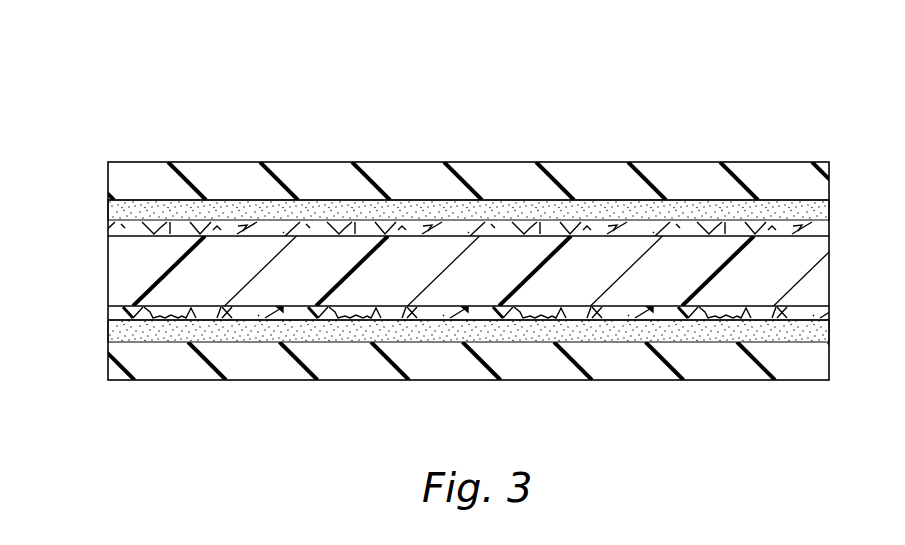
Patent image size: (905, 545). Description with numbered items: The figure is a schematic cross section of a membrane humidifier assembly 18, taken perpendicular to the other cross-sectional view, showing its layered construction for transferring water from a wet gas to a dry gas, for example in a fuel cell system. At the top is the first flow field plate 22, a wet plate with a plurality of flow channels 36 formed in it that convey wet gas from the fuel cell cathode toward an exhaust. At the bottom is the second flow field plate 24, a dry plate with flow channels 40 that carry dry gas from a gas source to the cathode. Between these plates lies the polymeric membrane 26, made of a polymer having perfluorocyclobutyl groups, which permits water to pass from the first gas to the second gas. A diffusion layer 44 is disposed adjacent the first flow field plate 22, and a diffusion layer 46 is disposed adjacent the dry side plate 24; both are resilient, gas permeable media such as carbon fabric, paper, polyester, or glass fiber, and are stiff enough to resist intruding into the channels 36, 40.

The membrane humidifier assembly 18 is at (252, 115).
The first flow field plate 22 is at (550, 168).
The second flow field plate 24 is at (197, 372).
The polymeric membrane 26 is at (132, 282).
The flow channels 36 is at (123, 210).
The flow channels 40 is at (108, 337).
The diffusion layer 44 is at (112, 230).
The diffusion layer 46 is at (115, 313).